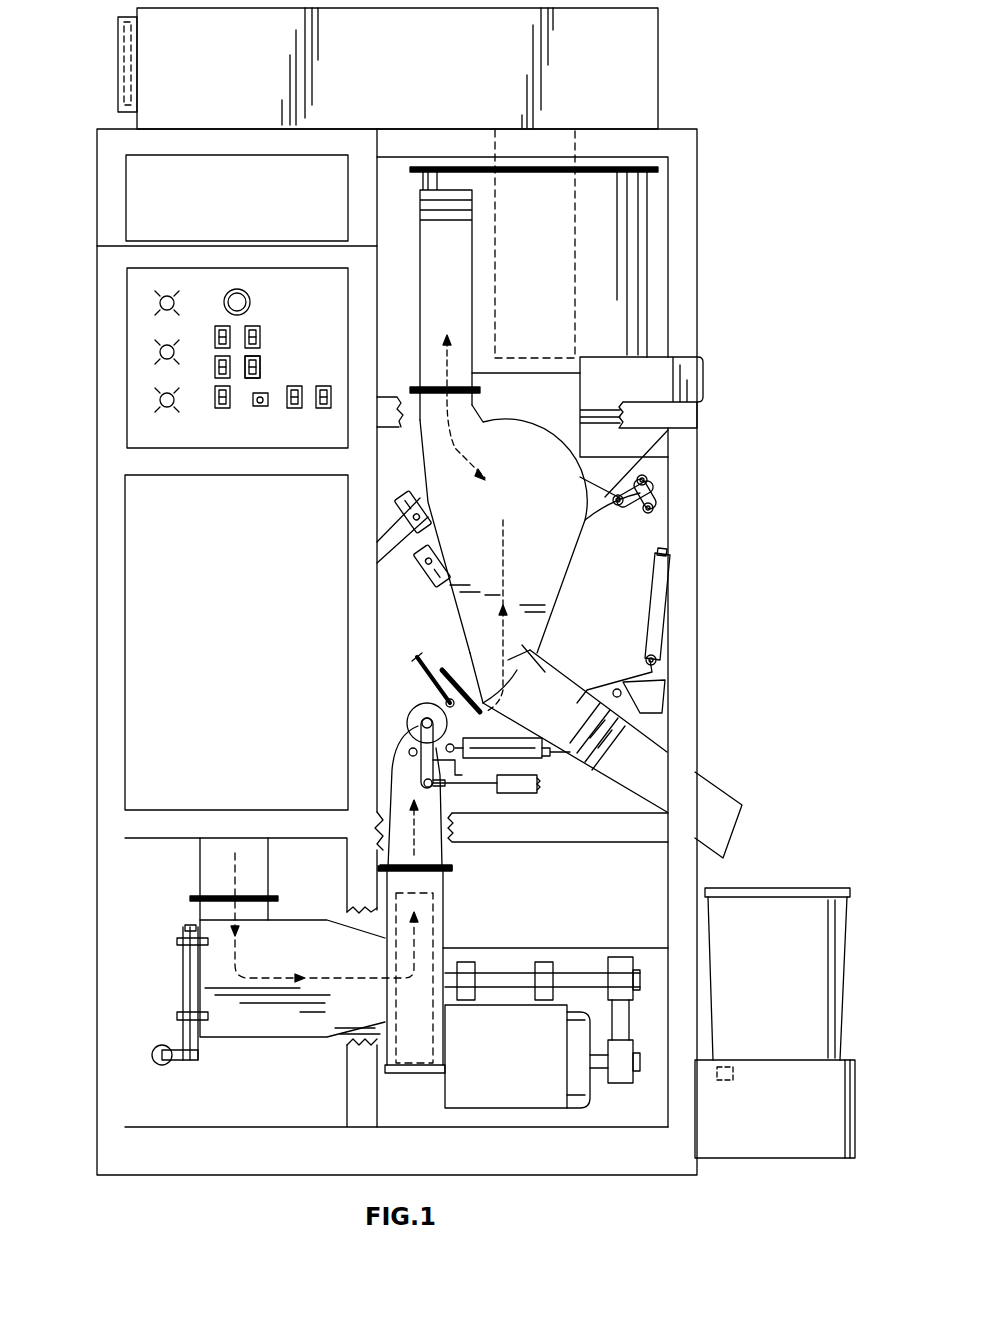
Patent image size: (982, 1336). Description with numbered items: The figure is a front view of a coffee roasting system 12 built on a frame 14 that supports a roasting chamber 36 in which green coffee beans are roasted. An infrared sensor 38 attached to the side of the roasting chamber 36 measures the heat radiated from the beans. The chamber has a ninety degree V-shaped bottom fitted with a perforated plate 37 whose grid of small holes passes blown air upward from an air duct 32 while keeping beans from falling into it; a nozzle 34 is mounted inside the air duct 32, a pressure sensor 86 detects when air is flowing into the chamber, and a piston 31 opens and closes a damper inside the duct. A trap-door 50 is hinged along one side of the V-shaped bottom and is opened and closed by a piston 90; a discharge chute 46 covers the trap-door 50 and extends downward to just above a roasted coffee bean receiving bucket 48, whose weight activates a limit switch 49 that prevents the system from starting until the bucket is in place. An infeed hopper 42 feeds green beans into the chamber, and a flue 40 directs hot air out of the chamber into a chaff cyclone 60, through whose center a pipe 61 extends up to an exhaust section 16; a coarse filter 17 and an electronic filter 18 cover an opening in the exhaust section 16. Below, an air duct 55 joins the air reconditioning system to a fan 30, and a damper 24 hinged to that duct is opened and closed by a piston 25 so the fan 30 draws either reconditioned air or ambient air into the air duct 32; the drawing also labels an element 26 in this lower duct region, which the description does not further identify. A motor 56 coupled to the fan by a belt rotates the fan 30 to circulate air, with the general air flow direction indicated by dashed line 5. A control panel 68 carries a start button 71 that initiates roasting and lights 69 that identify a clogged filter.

The roasting system 12 is at (748, 72).
The frame 14 is at (697, 156).
The exhaust section 16 is at (658, 63).
The coarse filter 17 is at (131, 67).
The electronic filter 18 is at (118, 66).
The damper 24 is at (182, 983).
The piston 25 is at (160, 1067).
The hopper 26 is at (260, 1040).
The dashed line 5 is at (278, 977).
The fan 30 is at (443, 918).
The piston 31 is at (520, 797).
The air duct 32 is at (396, 782).
The nozzle 34 is at (450, 658).
The roasting chamber 36 is at (557, 588).
The perforated plate 37 is at (497, 717).
The infrared sensor 38 is at (397, 568).
The flue 40 is at (472, 238).
The infeed hopper 42 is at (703, 381).
The discharge chute 46 is at (718, 788).
The roasted coffee bean receiving bucket 48 is at (818, 888).
The limit switch 49 is at (733, 1080).
The trap-door 50 is at (537, 657).
The air duct 55 is at (623, 1013).
The motor 56 is at (598, 1106).
The chaff cyclone 60 is at (648, 226).
The pipe 61 is at (577, 268).
The control panel 68 is at (330, 313).
The lights 69 is at (159, 304).
The start button 71 is at (262, 366).
The pressure sensor 86 is at (410, 750).
The piston 90 is at (530, 760).